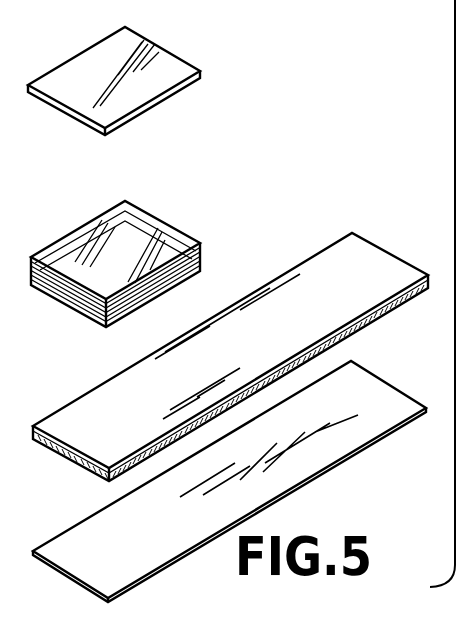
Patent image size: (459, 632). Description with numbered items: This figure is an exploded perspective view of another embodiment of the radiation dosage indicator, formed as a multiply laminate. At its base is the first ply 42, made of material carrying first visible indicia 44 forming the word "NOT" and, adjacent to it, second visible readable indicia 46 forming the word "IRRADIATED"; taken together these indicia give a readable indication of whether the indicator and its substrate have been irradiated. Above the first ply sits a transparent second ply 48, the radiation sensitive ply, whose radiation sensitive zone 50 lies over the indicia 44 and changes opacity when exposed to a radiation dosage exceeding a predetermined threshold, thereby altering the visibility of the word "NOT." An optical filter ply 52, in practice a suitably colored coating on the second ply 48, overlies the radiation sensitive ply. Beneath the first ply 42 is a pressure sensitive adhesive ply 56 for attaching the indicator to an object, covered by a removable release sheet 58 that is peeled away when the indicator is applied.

The first ply 42 is at (372, 260).
The first visible indicia 44 is at (112, 408).
The second visible readable indicia 46 is at (336, 272).
The second ply 48 is at (82, 305).
The radiation sensitive zone 50 is at (127, 277).
The optical filter ply 52 is at (172, 62).
The pressure sensitive adhesive ply 56 is at (88, 470).
The removable release sheet 58 is at (106, 570).